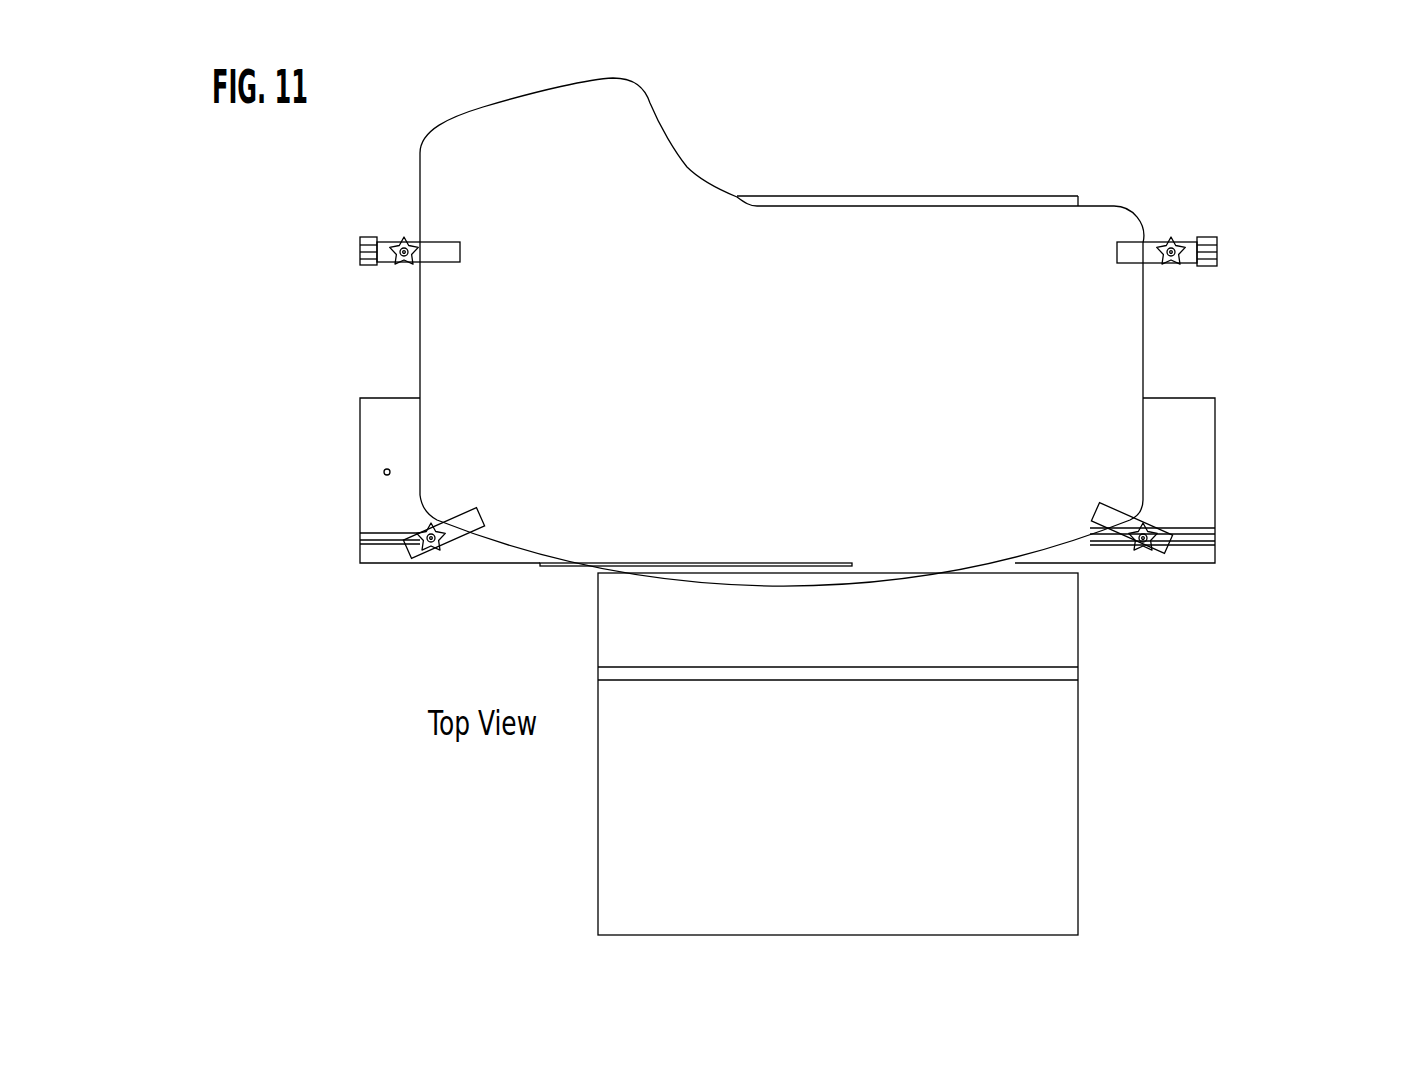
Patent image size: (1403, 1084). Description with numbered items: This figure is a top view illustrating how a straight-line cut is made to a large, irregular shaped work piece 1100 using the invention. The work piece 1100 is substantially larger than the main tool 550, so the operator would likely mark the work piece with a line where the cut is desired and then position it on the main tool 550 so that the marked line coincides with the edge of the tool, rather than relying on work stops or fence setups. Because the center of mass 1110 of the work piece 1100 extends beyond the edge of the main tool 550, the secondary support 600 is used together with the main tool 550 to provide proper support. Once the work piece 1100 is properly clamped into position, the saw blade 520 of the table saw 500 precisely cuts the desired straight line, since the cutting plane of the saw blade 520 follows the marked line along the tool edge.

The table saw 500 is at (1078, 807).
The saw blade 520 is at (802, 564).
The main tool 550 is at (1216, 442).
The secondary support 600 is at (1210, 237).
The work piece 1100 is at (1015, 565).
The center of mass 1110 is at (737, 350).